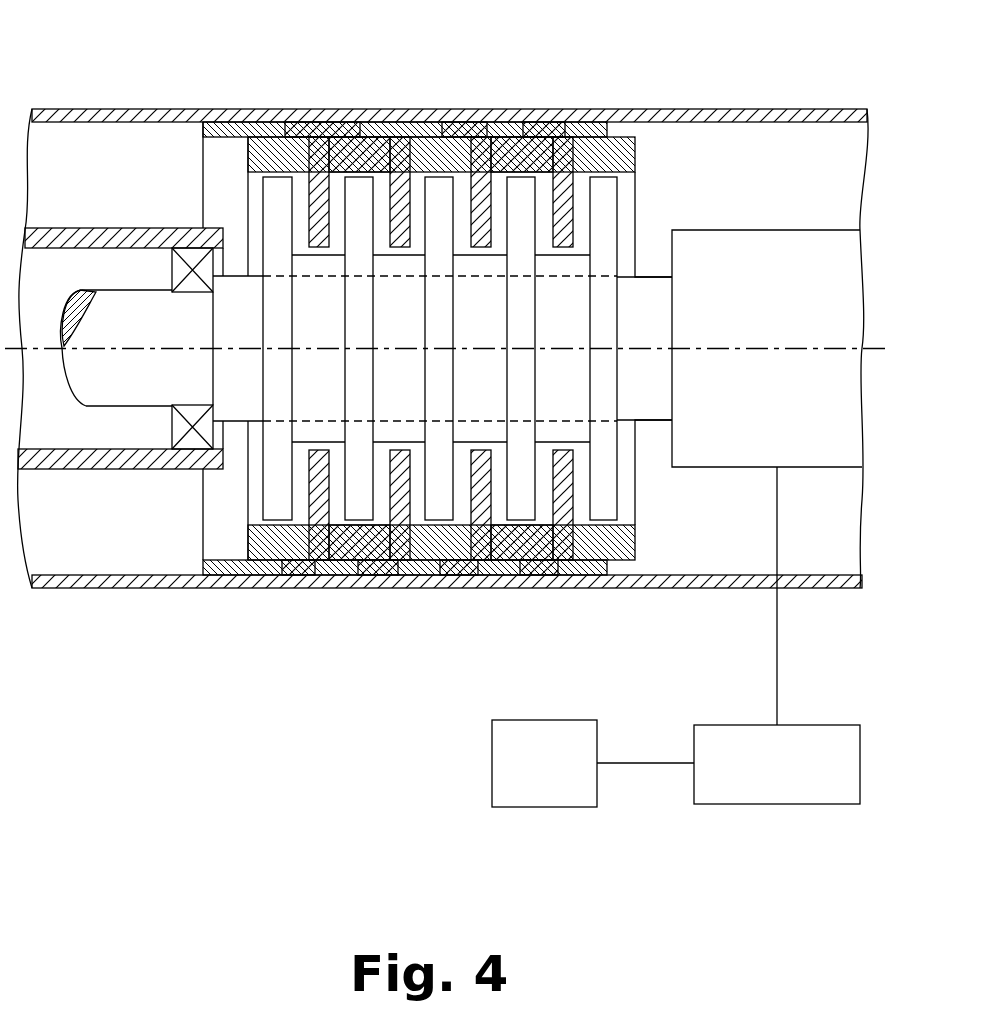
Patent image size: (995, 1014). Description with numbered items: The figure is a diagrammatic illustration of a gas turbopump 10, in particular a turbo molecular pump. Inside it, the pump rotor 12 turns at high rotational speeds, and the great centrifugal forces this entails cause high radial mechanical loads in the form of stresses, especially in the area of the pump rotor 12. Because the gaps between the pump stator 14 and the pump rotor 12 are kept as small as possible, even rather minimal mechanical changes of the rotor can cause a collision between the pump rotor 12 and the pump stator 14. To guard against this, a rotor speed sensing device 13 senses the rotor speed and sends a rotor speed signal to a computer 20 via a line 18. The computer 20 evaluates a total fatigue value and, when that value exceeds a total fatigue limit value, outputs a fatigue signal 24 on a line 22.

The gas turbopump 10 is at (175, 648).
The pump rotor 12 is at (143, 320).
The rotor speed sensing device 13 is at (765, 285).
The pump stator 14 is at (318, 162).
The line 18 is at (777, 638).
The computer 20 is at (796, 790).
The line 22 is at (647, 765).
The fatigue signal 24 is at (538, 790).